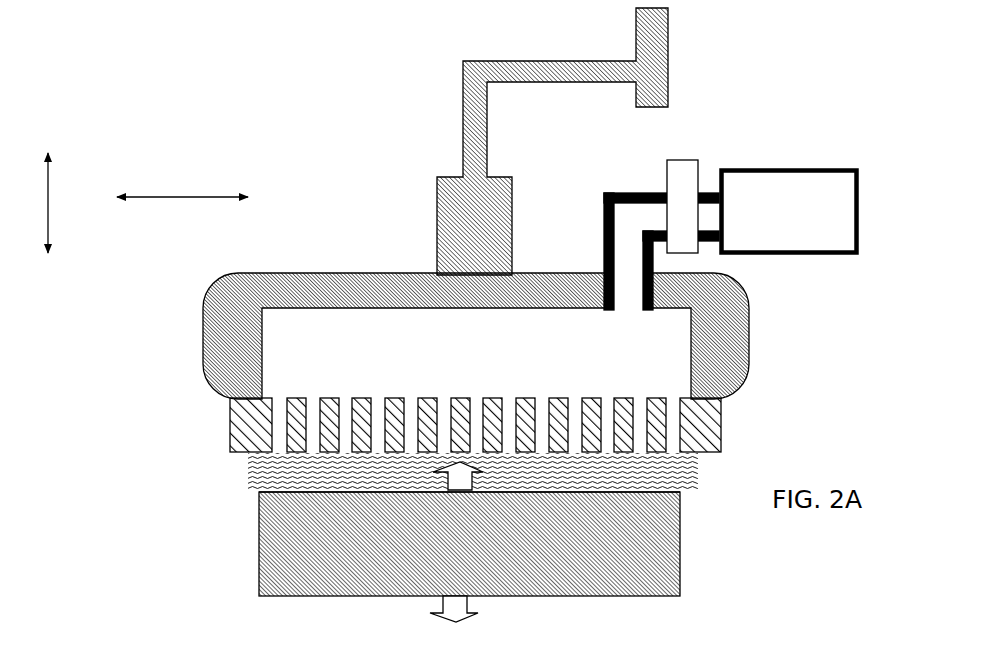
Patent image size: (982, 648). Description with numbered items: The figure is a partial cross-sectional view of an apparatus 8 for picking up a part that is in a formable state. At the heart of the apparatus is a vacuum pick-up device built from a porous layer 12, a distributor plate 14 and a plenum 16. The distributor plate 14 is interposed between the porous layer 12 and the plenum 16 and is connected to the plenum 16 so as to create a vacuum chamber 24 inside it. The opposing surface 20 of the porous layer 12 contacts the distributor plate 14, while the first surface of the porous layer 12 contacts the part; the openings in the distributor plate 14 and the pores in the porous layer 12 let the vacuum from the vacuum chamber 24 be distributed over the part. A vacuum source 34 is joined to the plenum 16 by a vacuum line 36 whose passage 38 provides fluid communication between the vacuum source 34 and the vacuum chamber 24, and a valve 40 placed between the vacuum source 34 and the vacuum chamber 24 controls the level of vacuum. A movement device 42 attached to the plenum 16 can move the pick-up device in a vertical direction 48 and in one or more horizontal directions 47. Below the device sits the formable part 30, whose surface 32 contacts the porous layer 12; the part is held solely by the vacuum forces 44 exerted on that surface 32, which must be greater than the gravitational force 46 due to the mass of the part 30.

The apparatus 8 is at (138, 17).
The porous layer 12 is at (255, 468).
The distributor plate 14 is at (195, 400).
The plenum 16 is at (202, 317).
The opposing surface 20 is at (685, 645).
The vacuum chamber 24 is at (360, 362).
The formable part 30 is at (345, 558).
The surface 32 is at (579, 494).
The vacuum source 34 is at (810, 238).
The vacuum line 36 is at (655, 192).
The passage 38 is at (633, 222).
The valve 40 is at (682, 180).
The movement device 42 is at (480, 151).
The vacuum forces 44 is at (452, 482).
The gravitational force 46 is at (443, 603).
The horizontal direction 47 is at (192, 197).
The vertical direction 48 is at (48, 190).